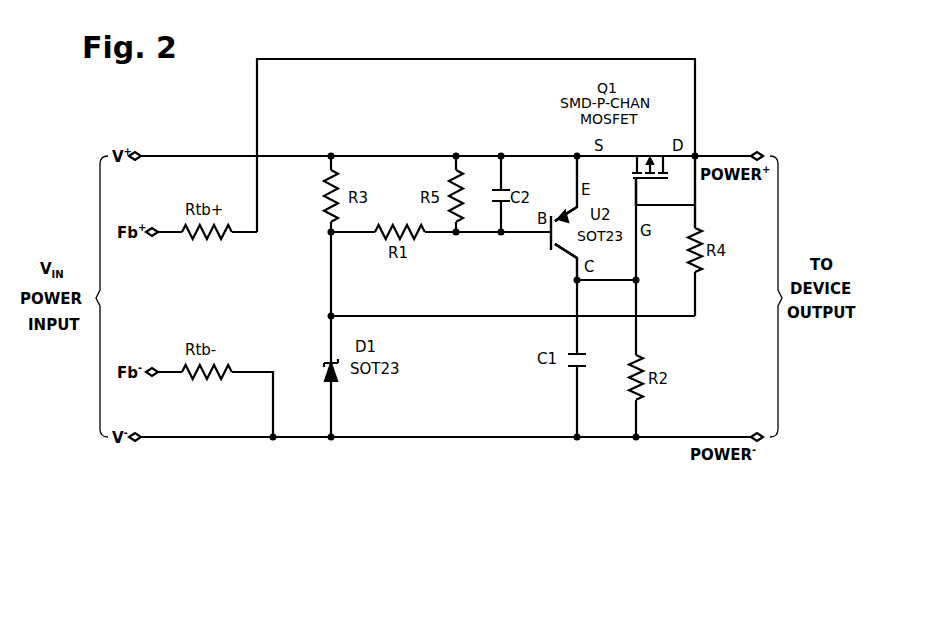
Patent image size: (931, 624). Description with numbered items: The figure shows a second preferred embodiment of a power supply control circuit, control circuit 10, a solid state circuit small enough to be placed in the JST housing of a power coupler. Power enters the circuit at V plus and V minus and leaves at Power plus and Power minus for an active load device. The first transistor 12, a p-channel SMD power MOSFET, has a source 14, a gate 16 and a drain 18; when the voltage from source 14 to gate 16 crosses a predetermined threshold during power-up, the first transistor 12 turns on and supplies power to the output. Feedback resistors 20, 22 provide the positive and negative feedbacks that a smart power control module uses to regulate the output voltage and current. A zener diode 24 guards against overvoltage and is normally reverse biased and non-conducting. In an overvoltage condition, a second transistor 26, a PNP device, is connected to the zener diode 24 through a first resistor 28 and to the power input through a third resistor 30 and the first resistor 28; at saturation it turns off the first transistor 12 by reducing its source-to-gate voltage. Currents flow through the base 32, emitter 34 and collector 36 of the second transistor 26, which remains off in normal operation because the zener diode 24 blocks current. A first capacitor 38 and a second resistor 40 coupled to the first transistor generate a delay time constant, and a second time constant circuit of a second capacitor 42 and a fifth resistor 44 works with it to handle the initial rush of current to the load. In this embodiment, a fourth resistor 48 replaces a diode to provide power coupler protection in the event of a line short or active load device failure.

The control circuit 10 is at (308, 466).
The first transistor 12 is at (652, 165).
The source 14 is at (585, 153).
The gate 16 is at (638, 205).
The drain 18 is at (692, 153).
The feedback resistor 20 is at (190, 236).
The feedback resistor 22 is at (192, 378).
The zener diode 24 is at (338, 380).
The second transistor 26 is at (617, 253).
The resistor R1 28 is at (395, 227).
The resistor R3 30 is at (326, 183).
The base 32 is at (550, 240).
The emitter 34 is at (565, 216).
The collector 36 is at (573, 252).
The capacitor C1 38 is at (580, 366).
The resistor R2 40 is at (640, 400).
The capacitor C2 42 is at (500, 184).
The resistor R5 44 is at (451, 185).
The resistor R4 48 is at (698, 229).